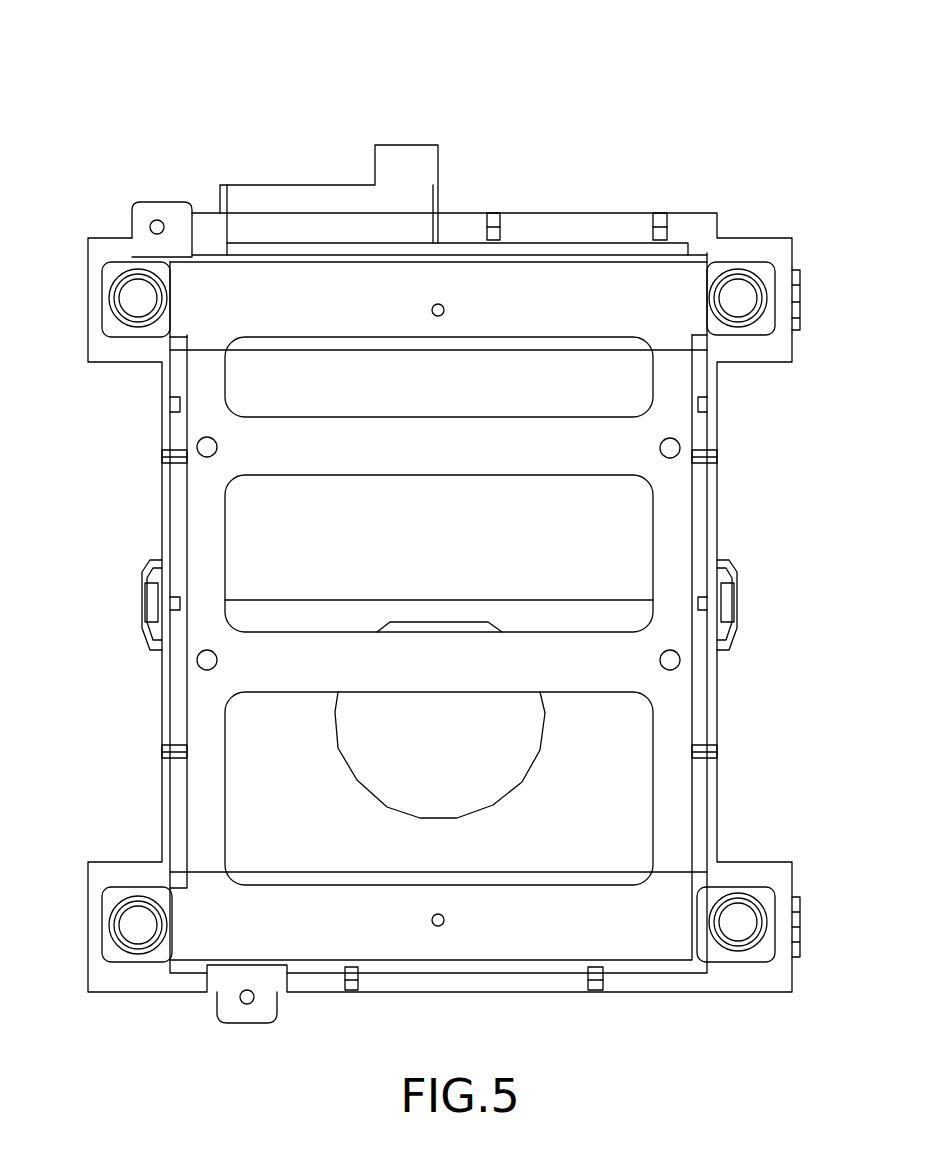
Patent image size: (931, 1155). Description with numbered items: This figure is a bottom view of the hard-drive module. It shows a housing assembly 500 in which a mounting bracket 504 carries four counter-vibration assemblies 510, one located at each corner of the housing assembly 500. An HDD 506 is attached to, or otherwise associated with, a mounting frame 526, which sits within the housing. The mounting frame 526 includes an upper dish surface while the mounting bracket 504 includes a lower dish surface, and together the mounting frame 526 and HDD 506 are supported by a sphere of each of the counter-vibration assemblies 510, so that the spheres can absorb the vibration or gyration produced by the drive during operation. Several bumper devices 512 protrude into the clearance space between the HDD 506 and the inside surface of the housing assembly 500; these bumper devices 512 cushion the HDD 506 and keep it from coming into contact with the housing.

The housing assembly 500 is at (400, 100).
The mounting bracket 504 is at (760, 250).
The HDD 506 is at (563, 362).
The counter-vibration assemblies 510 is at (138, 295).
The bumper devices 512 is at (700, 458).
The mounting frame 526 is at (200, 557).